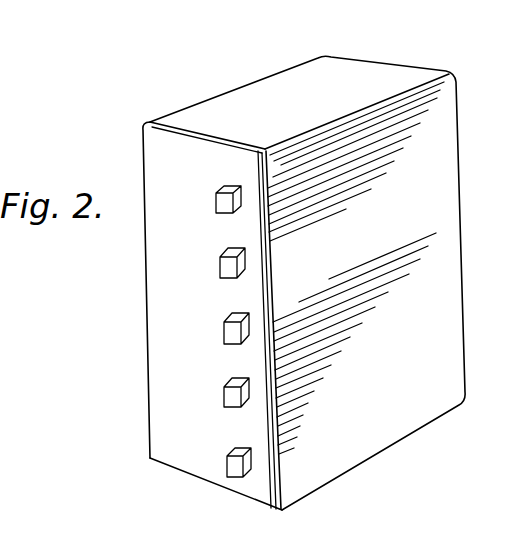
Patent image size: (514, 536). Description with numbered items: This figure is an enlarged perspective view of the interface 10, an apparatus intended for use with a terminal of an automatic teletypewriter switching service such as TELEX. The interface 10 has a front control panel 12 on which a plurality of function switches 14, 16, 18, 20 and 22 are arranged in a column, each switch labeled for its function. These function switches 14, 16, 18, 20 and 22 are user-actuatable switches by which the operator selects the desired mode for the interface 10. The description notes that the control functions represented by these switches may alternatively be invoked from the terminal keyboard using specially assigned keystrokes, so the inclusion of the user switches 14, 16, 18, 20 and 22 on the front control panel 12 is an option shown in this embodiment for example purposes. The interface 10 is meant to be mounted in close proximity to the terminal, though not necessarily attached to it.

The interface 10 is at (449, 70).
The front control panel 12 is at (142, 137).
The function switch 14 is at (222, 192).
The function switch 16 is at (245, 267).
The function switch 18 is at (237, 320).
The function switch 20 is at (246, 399).
The function switch 22 is at (237, 477).